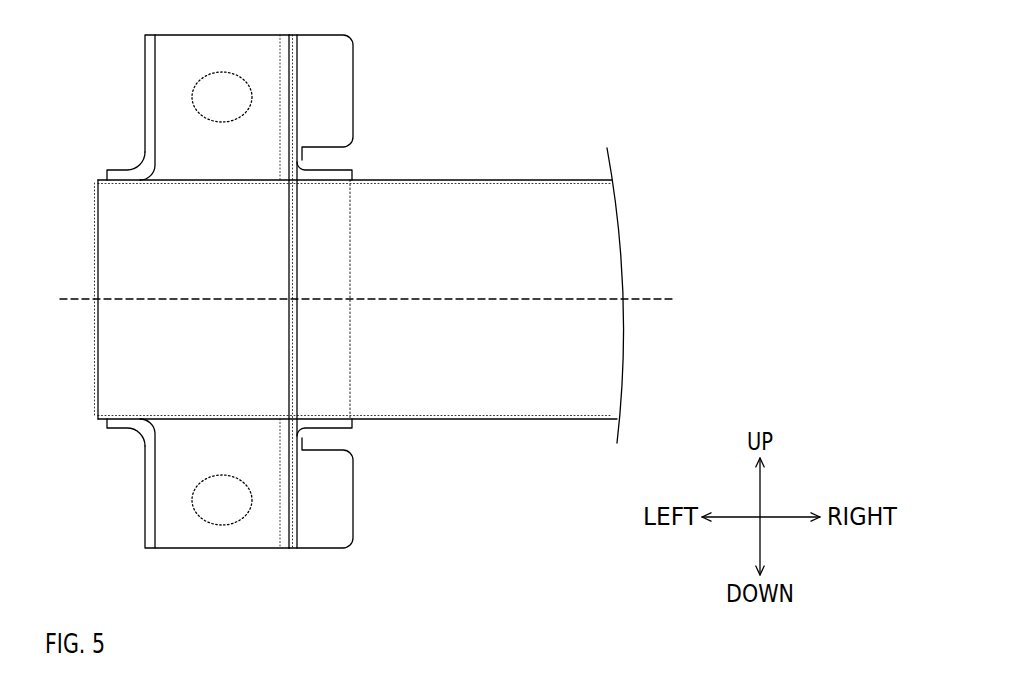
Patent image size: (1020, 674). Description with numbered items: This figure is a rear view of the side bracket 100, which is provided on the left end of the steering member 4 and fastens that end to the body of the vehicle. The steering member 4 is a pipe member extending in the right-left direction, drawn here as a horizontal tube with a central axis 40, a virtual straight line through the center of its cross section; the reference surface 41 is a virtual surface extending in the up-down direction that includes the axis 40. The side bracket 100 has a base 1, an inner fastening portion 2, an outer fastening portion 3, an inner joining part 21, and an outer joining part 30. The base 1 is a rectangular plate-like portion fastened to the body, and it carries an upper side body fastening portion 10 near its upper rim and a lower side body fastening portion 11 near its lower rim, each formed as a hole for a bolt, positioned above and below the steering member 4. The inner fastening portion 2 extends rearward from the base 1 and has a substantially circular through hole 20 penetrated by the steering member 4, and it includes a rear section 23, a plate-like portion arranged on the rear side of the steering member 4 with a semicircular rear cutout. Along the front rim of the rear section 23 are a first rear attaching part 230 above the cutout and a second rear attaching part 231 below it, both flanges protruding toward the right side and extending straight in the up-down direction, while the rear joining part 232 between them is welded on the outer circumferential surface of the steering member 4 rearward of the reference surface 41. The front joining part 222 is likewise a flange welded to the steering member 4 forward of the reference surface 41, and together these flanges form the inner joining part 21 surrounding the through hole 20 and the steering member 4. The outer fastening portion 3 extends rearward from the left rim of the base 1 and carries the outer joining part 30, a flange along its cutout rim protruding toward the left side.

The base 1 is at (243, 535).
The inner fastening portion 2 is at (358, 510).
The outer fastening portion 3 is at (148, 88).
The steering member 4 is at (527, 410).
The upper side body fastening portion 10 is at (213, 97).
The lower side body fastening portion 11 is at (212, 510).
The through hole 20 is at (353, 332).
The inner joining part 21 is at (394, 307).
The rear section 23 is at (290, 158).
The outer joining part 30 is at (125, 172).
The axis 40 is at (237, 299).
The reference surface 41 is at (367, 332).
The side bracket 100 is at (495, 107).
The front joining part 222 is at (345, 170).
The first rear attaching part 230 is at (340, 68).
The second rear attaching part 231 is at (340, 490).
The rear joining part 232 is at (335, 268).